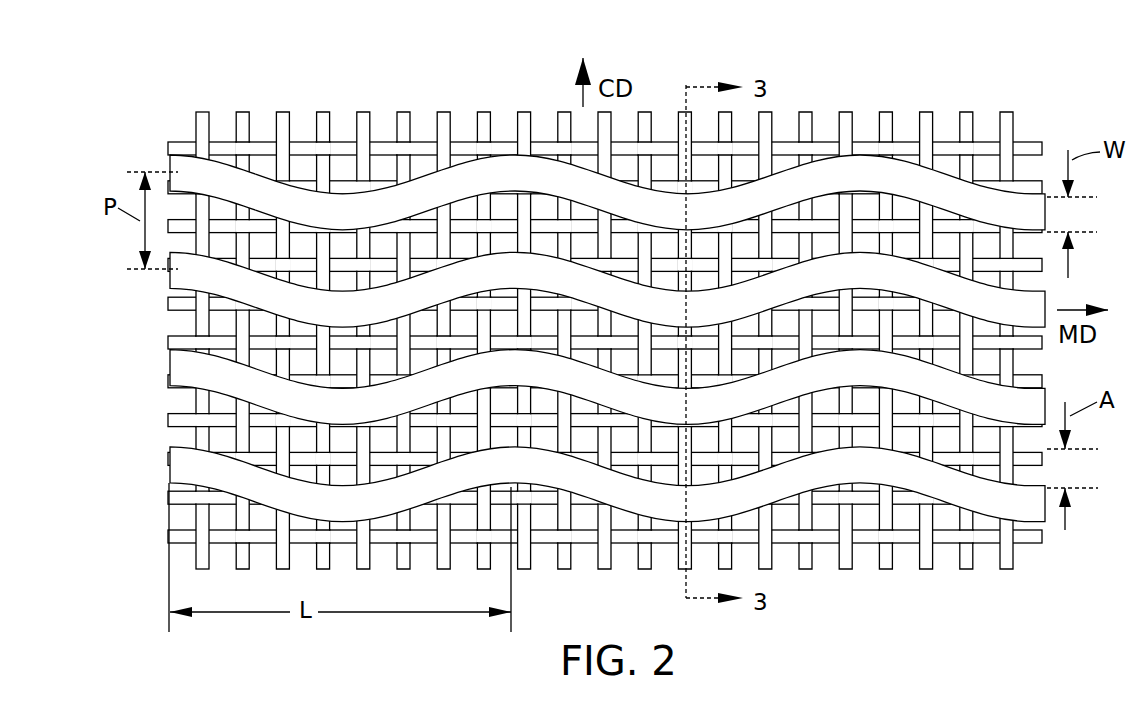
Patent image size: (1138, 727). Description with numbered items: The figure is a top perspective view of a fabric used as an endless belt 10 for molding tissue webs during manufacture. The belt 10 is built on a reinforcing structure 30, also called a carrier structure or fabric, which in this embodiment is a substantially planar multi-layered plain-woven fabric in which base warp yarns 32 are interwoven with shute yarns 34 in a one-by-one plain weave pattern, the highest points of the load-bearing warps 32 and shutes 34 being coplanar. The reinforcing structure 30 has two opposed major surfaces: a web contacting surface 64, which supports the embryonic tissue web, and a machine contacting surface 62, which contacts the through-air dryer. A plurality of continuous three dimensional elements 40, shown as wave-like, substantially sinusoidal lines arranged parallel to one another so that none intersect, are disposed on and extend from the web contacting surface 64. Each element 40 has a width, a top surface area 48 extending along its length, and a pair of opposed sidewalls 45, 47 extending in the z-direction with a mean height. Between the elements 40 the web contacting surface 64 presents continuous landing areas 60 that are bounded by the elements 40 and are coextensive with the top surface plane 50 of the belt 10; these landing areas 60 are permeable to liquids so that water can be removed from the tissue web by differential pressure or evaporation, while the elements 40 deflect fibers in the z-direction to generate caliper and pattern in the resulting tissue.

The endless belt 10 is at (703, 58).
The reinforcing structure 30 is at (383, 165).
The base warp yarns 32 is at (190, 139).
The shute yarns 34 is at (205, 114).
The continuous three dimensional element 40 is at (384, 500).
The sidewall 45 is at (182, 388).
The sidewall 47 is at (214, 340).
The top surface area 48 is at (872, 380).
The top surface plane 50 is at (376, 366).
The landing areas 60 is at (425, 250).
The machine contacting surface 62 is at (1040, 125).
The web contacting surface 64 is at (822, 138).